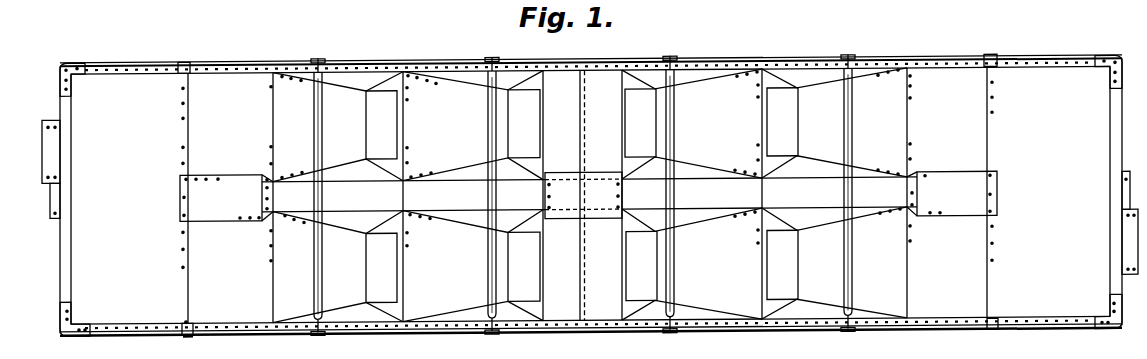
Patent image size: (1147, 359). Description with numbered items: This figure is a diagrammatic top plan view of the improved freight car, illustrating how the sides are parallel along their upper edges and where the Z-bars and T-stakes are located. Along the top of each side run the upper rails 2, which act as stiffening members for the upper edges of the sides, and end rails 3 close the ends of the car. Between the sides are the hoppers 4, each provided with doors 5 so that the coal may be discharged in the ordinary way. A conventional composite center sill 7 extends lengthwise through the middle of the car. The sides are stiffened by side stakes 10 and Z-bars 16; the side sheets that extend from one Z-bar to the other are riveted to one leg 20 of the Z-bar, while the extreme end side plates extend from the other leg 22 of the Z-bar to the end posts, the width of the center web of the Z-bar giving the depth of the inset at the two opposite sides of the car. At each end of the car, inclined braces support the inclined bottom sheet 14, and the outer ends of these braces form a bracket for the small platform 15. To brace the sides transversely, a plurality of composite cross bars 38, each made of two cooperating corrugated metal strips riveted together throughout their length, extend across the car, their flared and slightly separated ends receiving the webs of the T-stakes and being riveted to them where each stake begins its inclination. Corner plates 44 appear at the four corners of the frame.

The upper rail 2 is at (933, 69).
The end rail 3 is at (66, 243).
The hopper 4 is at (590, 195).
The door 5 is at (582, 195).
The composite center sill 7 is at (588, 195).
The side stake 10 is at (317, 61).
The inclined bottom sheet 14 is at (593, 195).
The small platform 15 is at (48, 155).
The Z-bar 16 is at (182, 64).
The leg of the Z-bar 20 is at (189, 337).
The other leg of the Z-bar 22 is at (185, 324).
The composite cross bar 38 is at (317, 243).
The corner plate 44 is at (67, 64).